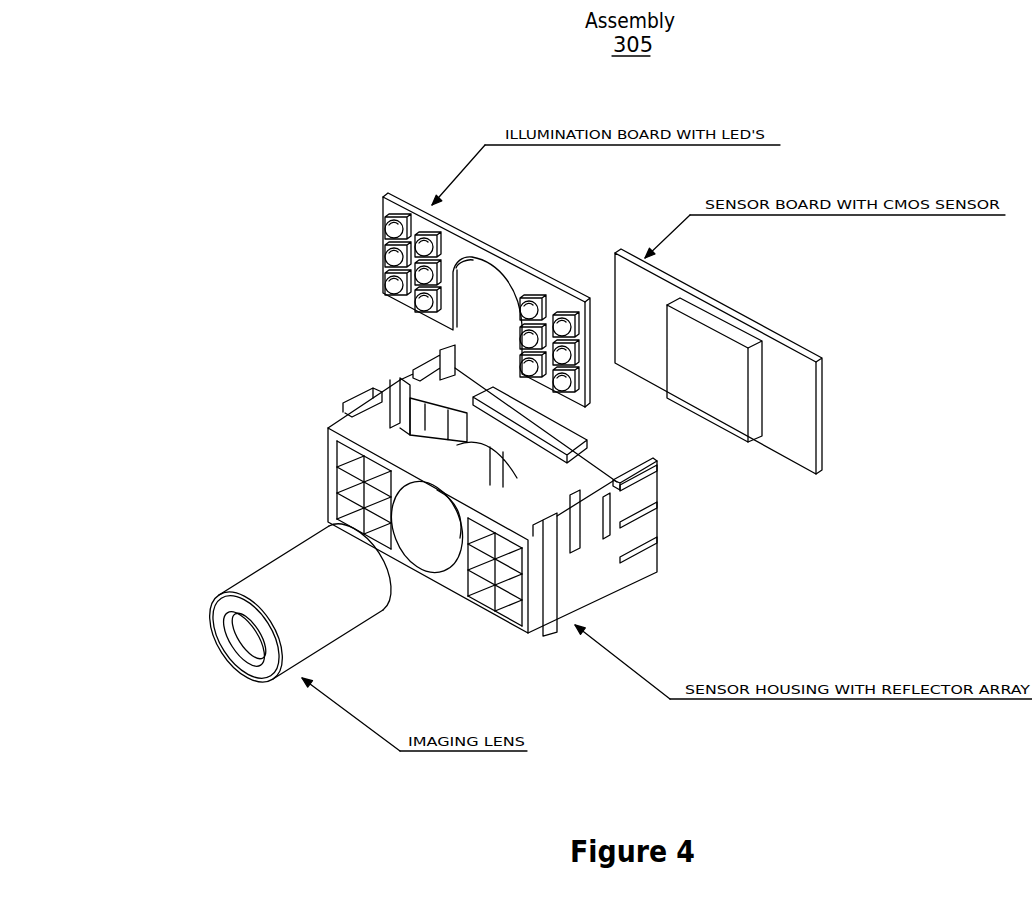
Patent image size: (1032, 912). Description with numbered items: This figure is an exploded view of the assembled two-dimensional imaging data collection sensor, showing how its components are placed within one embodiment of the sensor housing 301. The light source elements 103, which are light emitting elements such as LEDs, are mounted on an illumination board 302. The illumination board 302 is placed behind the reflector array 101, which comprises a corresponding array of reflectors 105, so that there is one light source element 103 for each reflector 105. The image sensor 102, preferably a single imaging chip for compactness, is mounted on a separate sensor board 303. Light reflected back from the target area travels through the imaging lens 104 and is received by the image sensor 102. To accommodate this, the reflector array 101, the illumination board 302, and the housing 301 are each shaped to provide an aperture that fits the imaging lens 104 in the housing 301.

The illumination board 302 is at (405, 197).
The light source elements 103 is at (385, 262).
The sensor board 303 is at (827, 418).
The image sensor 102 is at (718, 390).
The sensor housing 301 is at (582, 602).
The reflector array 101 is at (378, 430).
The reflectors 105 is at (516, 604).
The imaging lens 104 is at (262, 682).